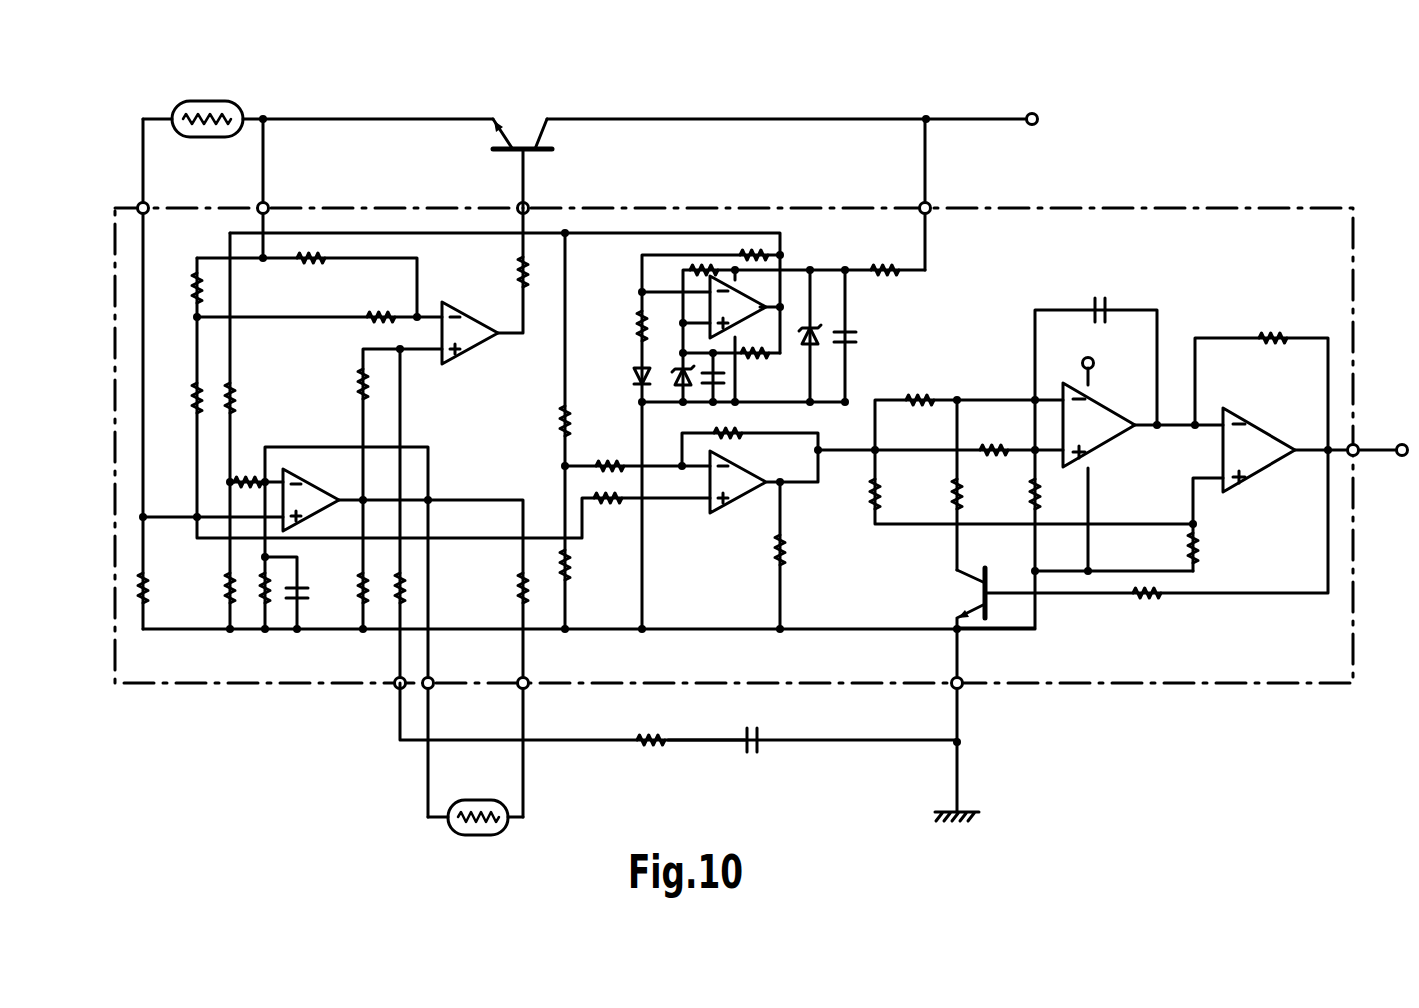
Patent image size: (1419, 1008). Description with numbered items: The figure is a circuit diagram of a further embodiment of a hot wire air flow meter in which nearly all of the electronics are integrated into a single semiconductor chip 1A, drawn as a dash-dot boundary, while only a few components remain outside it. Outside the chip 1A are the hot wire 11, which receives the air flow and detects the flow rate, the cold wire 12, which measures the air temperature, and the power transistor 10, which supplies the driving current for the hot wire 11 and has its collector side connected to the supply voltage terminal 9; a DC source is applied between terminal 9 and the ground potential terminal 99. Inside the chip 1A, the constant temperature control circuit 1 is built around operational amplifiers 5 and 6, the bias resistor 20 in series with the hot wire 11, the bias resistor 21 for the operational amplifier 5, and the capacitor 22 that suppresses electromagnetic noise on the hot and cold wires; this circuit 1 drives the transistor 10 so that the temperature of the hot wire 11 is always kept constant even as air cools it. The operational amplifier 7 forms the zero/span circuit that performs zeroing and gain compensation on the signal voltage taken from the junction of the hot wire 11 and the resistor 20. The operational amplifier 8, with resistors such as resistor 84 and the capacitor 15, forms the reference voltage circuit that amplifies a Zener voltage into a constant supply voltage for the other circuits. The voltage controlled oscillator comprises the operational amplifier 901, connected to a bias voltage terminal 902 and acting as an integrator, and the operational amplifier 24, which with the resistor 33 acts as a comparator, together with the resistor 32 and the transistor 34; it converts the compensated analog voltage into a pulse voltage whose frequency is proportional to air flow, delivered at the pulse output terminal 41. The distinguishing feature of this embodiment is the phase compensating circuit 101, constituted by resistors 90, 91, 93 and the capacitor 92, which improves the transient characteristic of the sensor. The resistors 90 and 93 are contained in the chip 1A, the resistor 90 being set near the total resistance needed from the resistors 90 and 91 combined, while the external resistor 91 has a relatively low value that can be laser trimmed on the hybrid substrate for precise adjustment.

The constant temperature control circuit 1 is at (170, 463).
The single chip 1A is at (1120, 208).
The operational amplifier 5 is at (307, 477).
The operational amplifier 6 is at (472, 318).
The operational amplifier 7 is at (740, 500).
The operational amplifier 8 is at (755, 300).
The supply voltage terminal 9 is at (1038, 119).
The power transistor 10 is at (513, 142).
The hot wire 11 is at (210, 100).
The cold wire 12 is at (470, 800).
The capacitor 15 is at (850, 333).
The bias resistor 20 is at (147, 597).
The bias resistor 21 is at (195, 392).
The capacitor 22 is at (302, 600).
The operational amplifier 24 is at (1268, 432).
The resistor 32 is at (918, 397).
The resistor 33 is at (1266, 335).
The transistor 34 is at (1103, 300).
The pulse output terminal 41 is at (1398, 445).
The resistor 84 is at (885, 265).
The resistor 90 is at (405, 580).
The resistor 91 is at (640, 740).
The capacitor 92 is at (745, 735).
The resistor 93 is at (362, 372).
The ground potential terminal 99 is at (963, 689).
The phase compensating circuit 101 is at (703, 747).
The operational amplifier 901 is at (1110, 432).
The bias voltage terminal 902 is at (1085, 357).